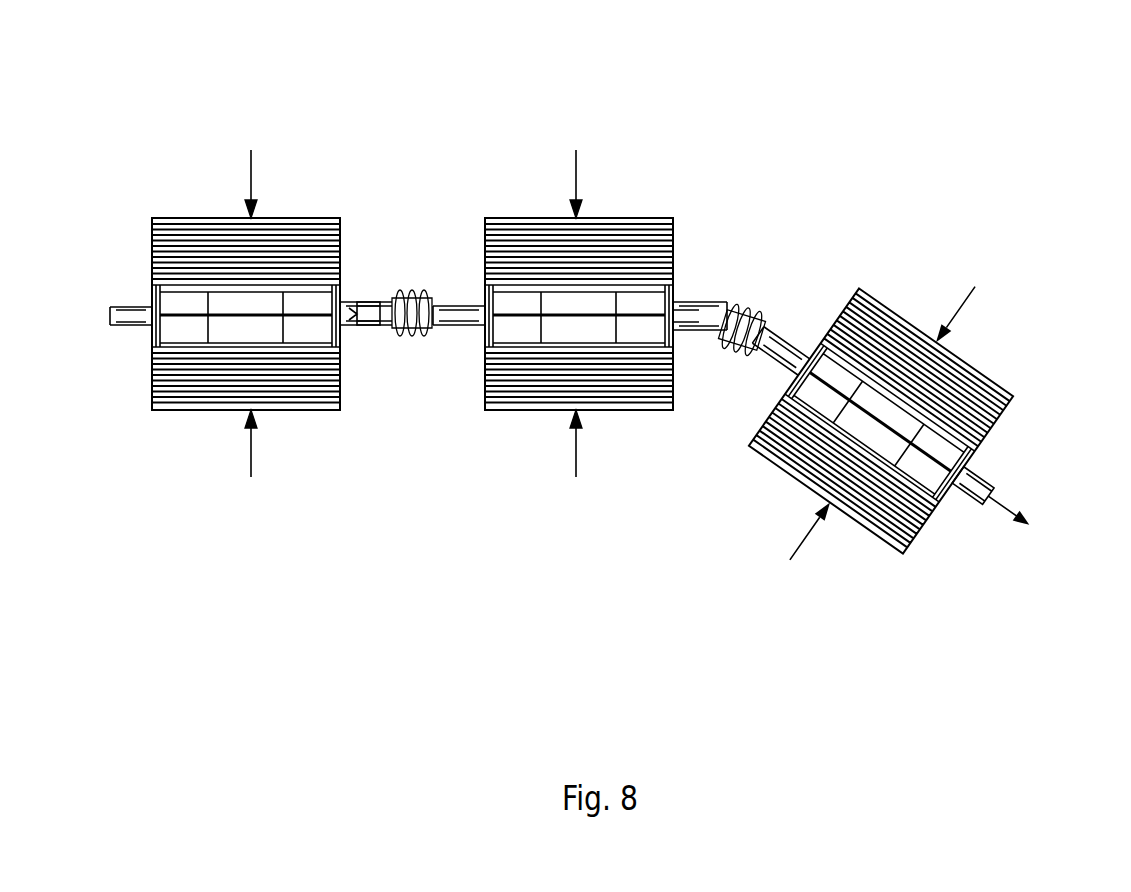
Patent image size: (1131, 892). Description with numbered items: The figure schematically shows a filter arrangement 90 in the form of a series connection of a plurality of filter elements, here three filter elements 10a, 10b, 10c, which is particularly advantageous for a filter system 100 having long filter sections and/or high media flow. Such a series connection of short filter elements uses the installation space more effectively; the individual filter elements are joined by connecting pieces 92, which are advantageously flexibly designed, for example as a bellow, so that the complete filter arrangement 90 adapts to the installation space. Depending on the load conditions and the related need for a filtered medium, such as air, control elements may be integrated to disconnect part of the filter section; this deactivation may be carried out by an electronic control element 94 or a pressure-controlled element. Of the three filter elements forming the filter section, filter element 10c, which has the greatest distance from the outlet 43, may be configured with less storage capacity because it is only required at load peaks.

The filter system 100 is at (996, 160).
The filter arrangement 90 is at (1010, 210).
The filter element 10a is at (985, 378).
The filter element 10b is at (650, 237).
The filter element 10c is at (307, 237).
The connecting piece 92 is at (408, 290).
The electronic control element 94 is at (354, 322).
The outlet 43 is at (987, 477).